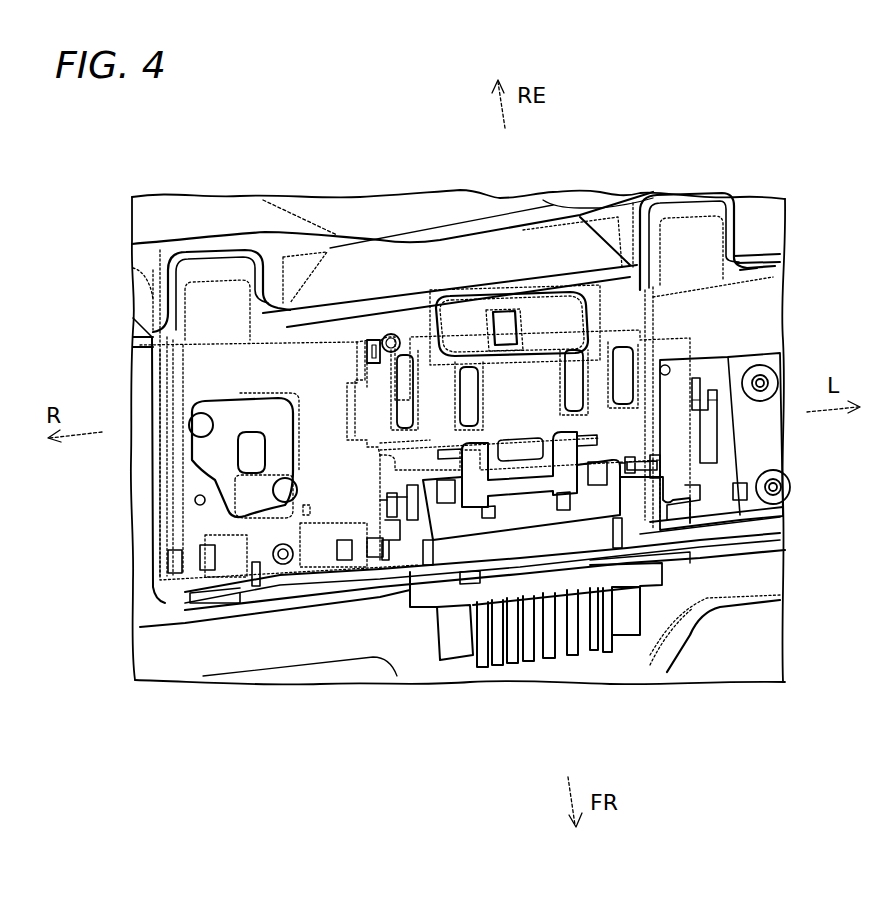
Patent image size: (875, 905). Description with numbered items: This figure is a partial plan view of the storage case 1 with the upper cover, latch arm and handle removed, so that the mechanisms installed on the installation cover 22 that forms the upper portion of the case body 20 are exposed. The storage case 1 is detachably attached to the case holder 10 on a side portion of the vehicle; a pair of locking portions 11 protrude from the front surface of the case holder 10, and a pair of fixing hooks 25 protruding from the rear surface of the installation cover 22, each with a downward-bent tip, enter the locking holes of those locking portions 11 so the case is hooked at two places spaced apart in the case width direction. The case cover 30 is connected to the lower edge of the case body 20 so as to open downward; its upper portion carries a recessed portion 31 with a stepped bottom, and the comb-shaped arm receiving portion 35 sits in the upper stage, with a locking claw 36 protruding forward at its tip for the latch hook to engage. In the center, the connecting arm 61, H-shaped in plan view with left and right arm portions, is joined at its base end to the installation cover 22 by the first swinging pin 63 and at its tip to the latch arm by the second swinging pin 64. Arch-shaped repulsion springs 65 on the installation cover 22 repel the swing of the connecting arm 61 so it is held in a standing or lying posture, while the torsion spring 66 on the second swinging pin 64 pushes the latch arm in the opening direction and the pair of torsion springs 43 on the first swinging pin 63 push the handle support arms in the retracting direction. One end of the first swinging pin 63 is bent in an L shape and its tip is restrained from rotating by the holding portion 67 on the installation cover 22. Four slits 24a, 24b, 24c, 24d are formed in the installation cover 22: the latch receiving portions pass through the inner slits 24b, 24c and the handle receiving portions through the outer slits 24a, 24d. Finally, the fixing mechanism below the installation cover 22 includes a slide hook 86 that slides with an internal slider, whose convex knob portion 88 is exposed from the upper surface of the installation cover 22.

The storage case 1 is at (181, 702).
The case holder 10 is at (427, 242).
The locking portion 11 is at (133, 282).
The case body 20 is at (138, 395).
The installation cover 22 is at (335, 512).
The slit 24a is at (388, 393).
The slit 24b is at (528, 441).
The slit 24c is at (563, 377).
The slit 24d is at (637, 363).
The fixing hook 25 is at (210, 290).
The case cover 30 is at (766, 698).
The recessed portion 31 is at (600, 673).
The arm receiving portion 35 is at (470, 525).
The locking claw 36 is at (497, 600).
The torsion spring 43 is at (392, 578).
The connecting arm 61 is at (556, 620).
The first swinging pin 63 is at (378, 560).
The second swinging pin 64 is at (443, 447).
The repulsion spring 65 is at (460, 545).
The torsion spring 66 is at (532, 427).
The holding portion 67 is at (720, 402).
The slide hook 86 is at (450, 287).
The knob portion 88 is at (517, 337).